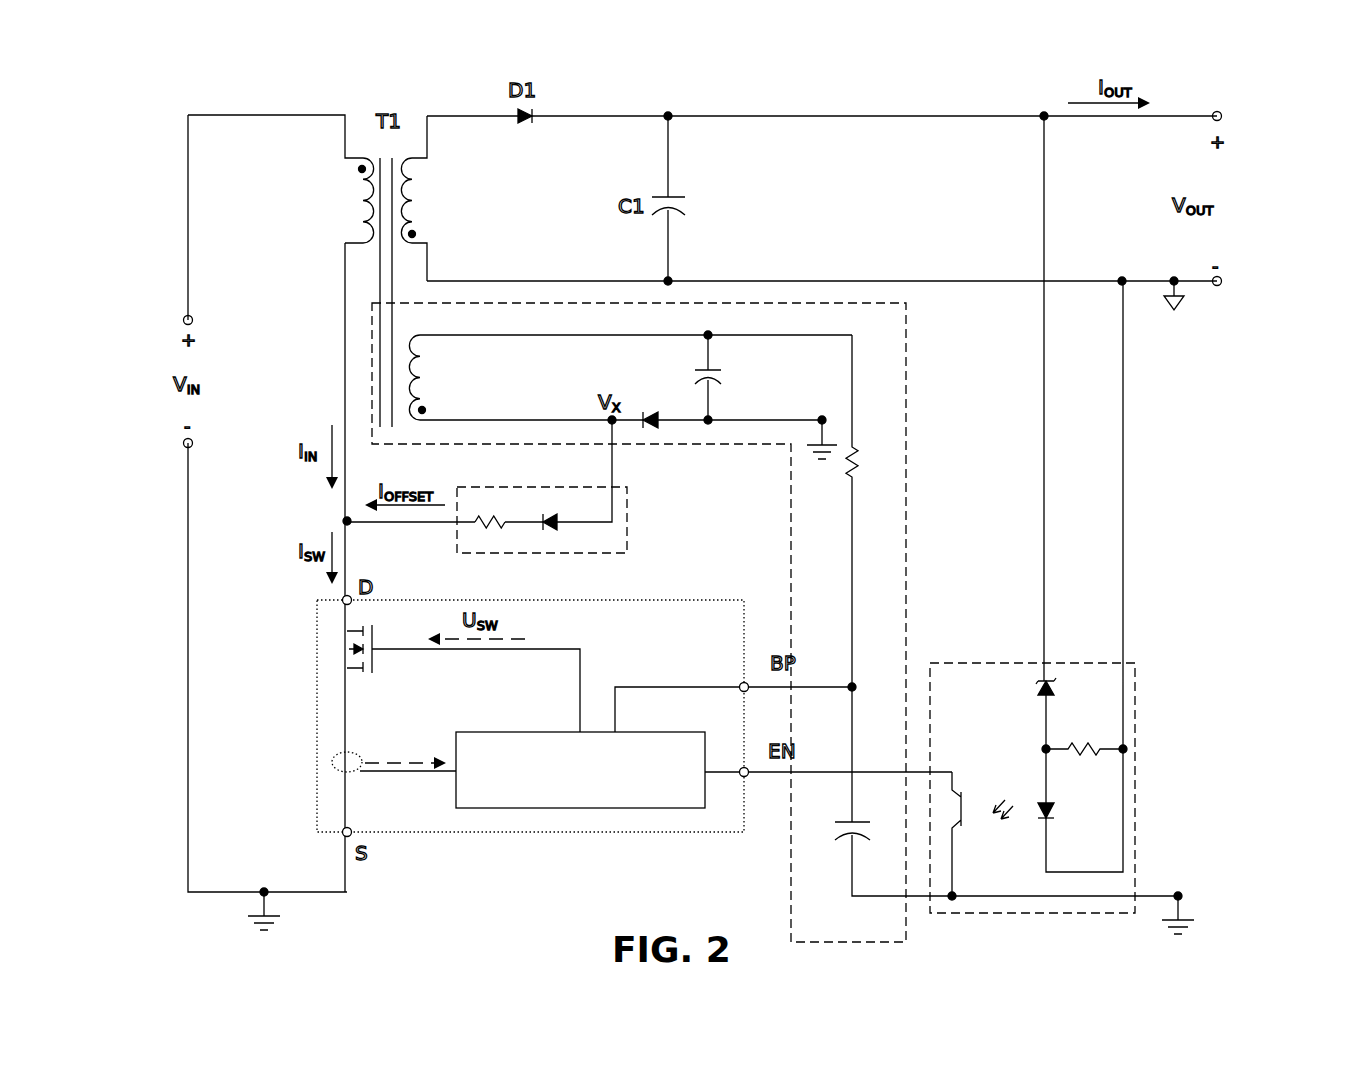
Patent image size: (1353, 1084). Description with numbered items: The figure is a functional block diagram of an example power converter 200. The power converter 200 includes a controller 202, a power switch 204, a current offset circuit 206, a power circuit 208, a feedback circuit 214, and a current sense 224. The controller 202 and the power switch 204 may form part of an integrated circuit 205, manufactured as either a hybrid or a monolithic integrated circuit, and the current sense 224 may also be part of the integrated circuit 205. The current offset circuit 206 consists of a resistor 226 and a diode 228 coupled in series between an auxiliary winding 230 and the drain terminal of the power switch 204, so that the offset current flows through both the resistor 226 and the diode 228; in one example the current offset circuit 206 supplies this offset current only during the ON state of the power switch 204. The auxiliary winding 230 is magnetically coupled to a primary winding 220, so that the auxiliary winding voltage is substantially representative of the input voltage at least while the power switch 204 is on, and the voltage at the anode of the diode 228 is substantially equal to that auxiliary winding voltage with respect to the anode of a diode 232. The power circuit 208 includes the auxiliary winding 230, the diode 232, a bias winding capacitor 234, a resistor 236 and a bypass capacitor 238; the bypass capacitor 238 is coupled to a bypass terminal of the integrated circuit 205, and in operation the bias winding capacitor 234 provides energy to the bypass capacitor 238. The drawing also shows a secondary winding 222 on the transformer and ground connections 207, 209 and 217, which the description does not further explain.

The power converter 200 is at (902, 95).
The controller 202 is at (500, 731).
The power switch 204 is at (378, 628).
The integrated circuit 205 is at (722, 600).
The current offset circuit 206 is at (632, 526).
The output return / ground terminal 207 is at (1190, 302).
The power circuit 208 is at (915, 355).
The input return / ground 209 is at (290, 913).
The feedback circuit 214 is at (1145, 683).
The ground 217 is at (1205, 896).
The primary winding 220 is at (350, 204).
The secondary winding 222 is at (429, 206).
The current sense 224 is at (355, 750).
The resistor 226 is at (490, 500).
The diode 228 is at (553, 500).
The auxiliary winding 230 is at (430, 386).
The diode 232 is at (650, 412).
The bias winding capacitor 234 is at (727, 373).
The resistor 236 is at (856, 445).
The bypass capacitor 238 is at (833, 855).